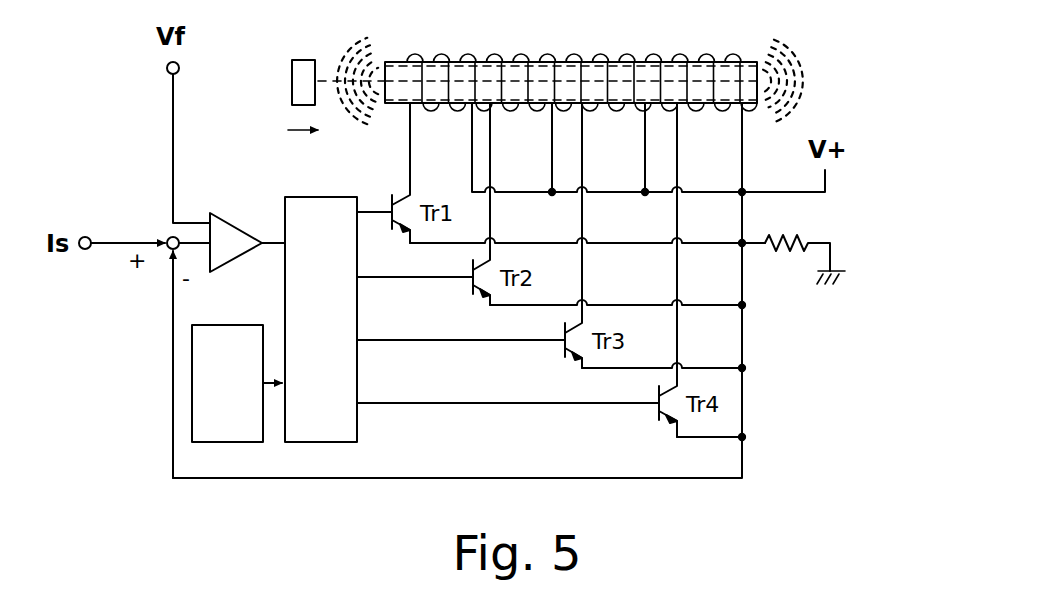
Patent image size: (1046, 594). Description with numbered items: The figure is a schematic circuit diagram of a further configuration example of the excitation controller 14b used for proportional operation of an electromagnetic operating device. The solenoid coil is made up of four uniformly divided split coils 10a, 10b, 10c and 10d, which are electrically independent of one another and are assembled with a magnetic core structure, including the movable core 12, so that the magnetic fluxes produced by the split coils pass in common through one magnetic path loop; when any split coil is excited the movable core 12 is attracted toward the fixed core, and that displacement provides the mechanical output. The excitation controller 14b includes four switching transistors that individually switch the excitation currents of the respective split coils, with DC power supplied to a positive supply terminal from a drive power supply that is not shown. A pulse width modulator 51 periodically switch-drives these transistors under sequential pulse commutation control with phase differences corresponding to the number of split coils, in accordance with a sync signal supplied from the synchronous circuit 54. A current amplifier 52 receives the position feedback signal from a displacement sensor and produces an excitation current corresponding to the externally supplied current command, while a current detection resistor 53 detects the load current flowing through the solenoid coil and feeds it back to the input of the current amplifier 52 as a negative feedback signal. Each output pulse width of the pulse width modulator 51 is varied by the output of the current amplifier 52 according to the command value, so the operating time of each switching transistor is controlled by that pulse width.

The split coil 10a is at (449, 60).
The split coil 10b is at (543, 60).
The split coil 10c is at (635, 60).
The split coil 10d is at (714, 60).
The movable core 12 is at (290, 82).
The excitation controller 14b is at (860, 415).
The pulse width modulator 51 is at (309, 216).
The current amplifier 52 is at (236, 234).
The current detection resistor 53 is at (793, 251).
The synchronous circuit 54 is at (226, 330).